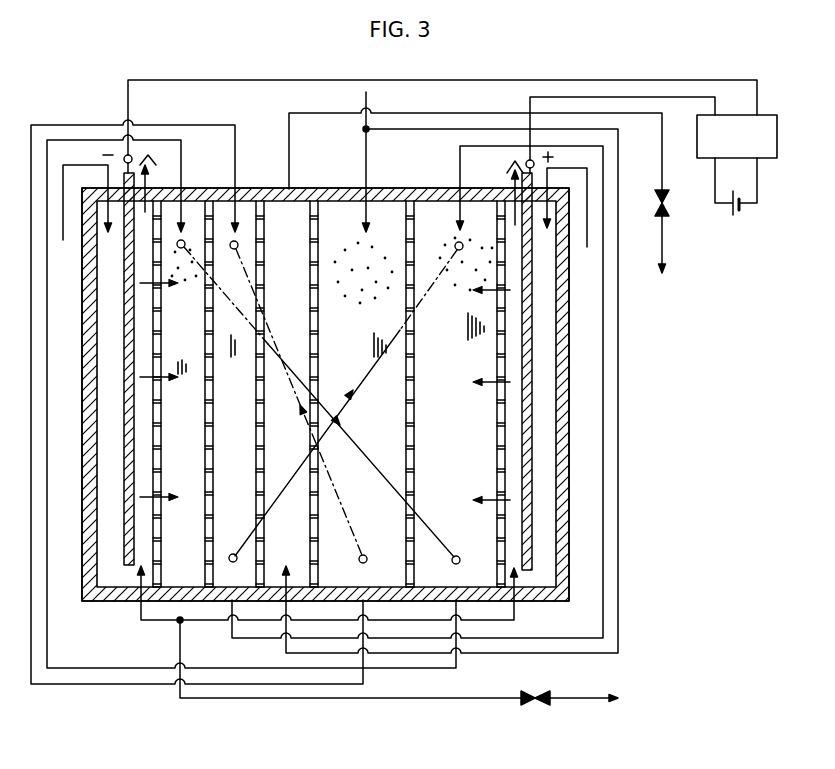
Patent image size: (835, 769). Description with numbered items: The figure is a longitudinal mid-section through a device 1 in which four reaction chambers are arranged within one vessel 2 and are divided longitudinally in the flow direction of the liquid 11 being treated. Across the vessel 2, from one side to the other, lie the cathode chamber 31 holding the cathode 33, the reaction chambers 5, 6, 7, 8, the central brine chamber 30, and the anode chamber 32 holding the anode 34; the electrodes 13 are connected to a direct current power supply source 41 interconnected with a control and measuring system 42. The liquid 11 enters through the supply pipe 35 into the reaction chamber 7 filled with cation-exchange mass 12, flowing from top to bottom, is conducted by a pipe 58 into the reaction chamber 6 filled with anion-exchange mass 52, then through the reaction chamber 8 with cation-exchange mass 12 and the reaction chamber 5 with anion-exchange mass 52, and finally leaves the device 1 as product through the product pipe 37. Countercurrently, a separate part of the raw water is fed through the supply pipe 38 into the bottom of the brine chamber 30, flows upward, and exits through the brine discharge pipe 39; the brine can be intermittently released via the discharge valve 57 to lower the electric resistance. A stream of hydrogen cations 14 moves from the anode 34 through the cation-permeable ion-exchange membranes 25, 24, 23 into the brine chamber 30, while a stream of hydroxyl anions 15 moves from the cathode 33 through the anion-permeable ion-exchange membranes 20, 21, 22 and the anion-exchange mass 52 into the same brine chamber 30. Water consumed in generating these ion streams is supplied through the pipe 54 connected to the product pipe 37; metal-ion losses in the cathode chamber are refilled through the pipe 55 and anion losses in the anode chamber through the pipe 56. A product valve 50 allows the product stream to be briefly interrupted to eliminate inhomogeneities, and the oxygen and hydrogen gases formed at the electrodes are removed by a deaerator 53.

The device 1 is at (578, 535).
The vessel 2 is at (571, 492).
The reaction chamber 5 is at (175, 441).
The reaction chamber 6 is at (228, 441).
The reaction chamber 7 is at (365, 445).
The reaction chamber 8 is at (448, 445).
The liquid 11 is at (188, 369).
The cation-exchange mass 12 is at (360, 296).
The electrodes 13 is at (265, 82).
The cations 14 is at (476, 384).
The anions 15 is at (176, 383).
The anion-permeable ion-exchange membrane 20 is at (159, 517).
The anion-permeable ion-exchange membrane 21 is at (212, 508).
The anion-permeable ion-exchange membrane 22 is at (264, 527).
The cation-permeable ion-exchange membrane 23 is at (317, 538).
The cation-permeable ion-exchange membrane 24 is at (405, 515).
The cation-permeable ion-exchange membrane 25 is at (497, 465).
The brine chamber 30 is at (275, 441).
The cathode chamber 31 is at (97, 441).
The anode chamber 32 is at (573, 446).
The cathode 33 is at (126, 346).
The anode 34 is at (533, 374).
The supply pipe 35 is at (368, 176).
The product pipe 37 is at (178, 649).
The supply pipe 38 is at (283, 647).
The discharge pipe 39 is at (291, 173).
The direct current power supply source 41 is at (742, 207).
The control and measuring system 42 is at (726, 152).
The product valve 50 is at (545, 706).
The anion-exchange mass 52 is at (188, 269).
The deaerator 53 is at (148, 158).
The pipe 54 is at (143, 620).
The pipe 55 is at (82, 163).
The pipe 56 is at (551, 233).
The discharge valve 57 is at (668, 207).
The pipe 58 is at (236, 167).